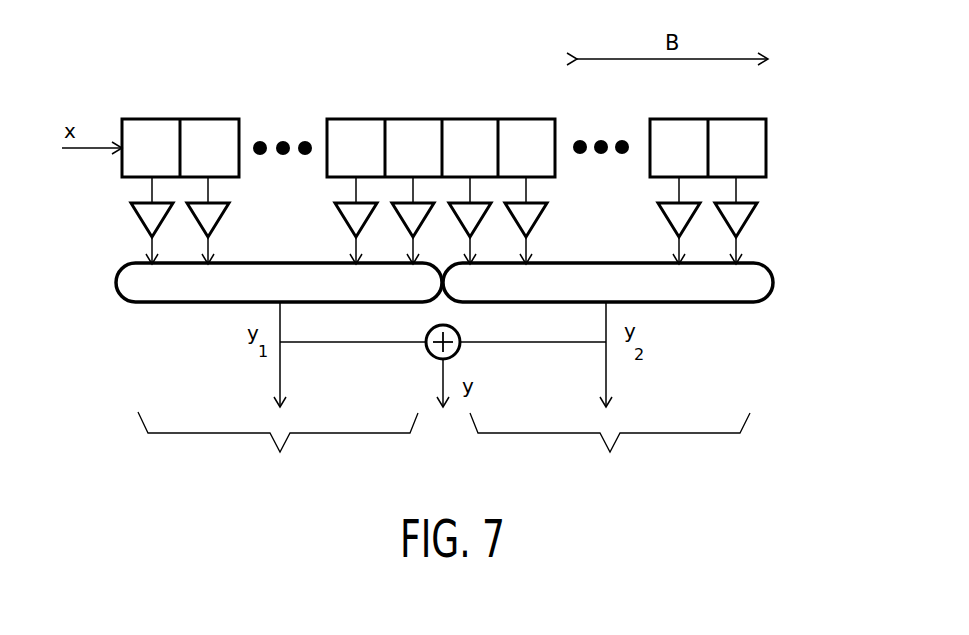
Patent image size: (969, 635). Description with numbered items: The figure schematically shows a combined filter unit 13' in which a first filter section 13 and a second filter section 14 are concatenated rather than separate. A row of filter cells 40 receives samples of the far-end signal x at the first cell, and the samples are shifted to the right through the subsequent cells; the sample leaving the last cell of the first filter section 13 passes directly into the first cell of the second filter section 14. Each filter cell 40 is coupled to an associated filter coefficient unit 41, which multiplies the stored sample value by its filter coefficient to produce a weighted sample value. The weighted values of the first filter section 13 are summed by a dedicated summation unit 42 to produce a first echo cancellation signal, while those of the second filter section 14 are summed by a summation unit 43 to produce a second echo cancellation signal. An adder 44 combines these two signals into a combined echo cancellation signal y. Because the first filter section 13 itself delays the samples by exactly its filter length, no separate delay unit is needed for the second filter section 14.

The filter cells 40 is at (802, 148).
The filter coefficient units 41 is at (798, 222).
The summation unit 42 is at (118, 300).
The summation unit 43 is at (774, 280).
The adder 44 is at (452, 330).
The first filter section 13 is at (278, 447).
The second filter section 14 is at (610, 448).
The combined filter unit 13' is at (75, 396).